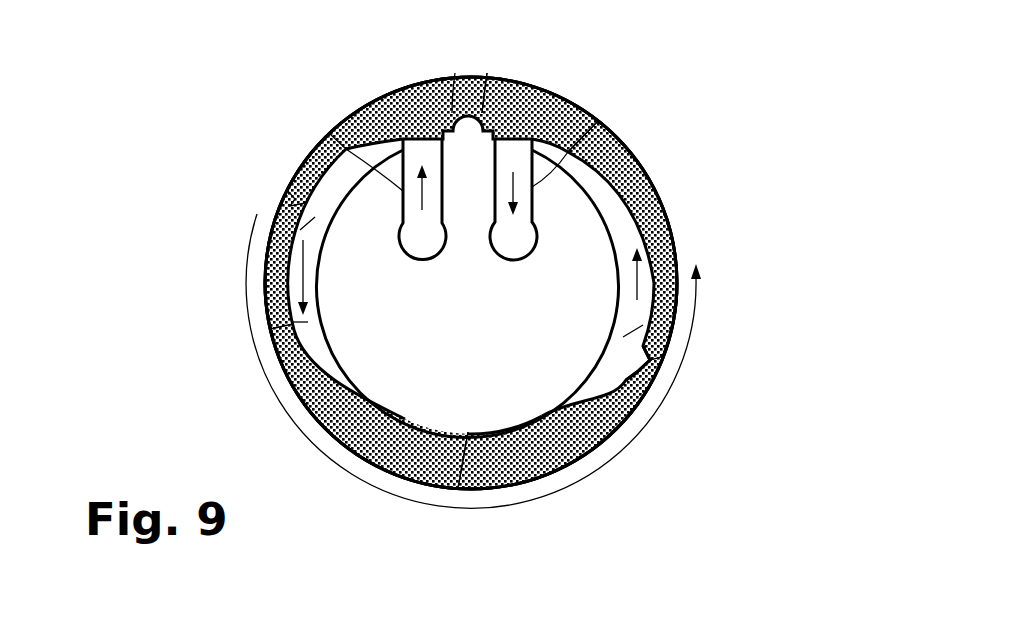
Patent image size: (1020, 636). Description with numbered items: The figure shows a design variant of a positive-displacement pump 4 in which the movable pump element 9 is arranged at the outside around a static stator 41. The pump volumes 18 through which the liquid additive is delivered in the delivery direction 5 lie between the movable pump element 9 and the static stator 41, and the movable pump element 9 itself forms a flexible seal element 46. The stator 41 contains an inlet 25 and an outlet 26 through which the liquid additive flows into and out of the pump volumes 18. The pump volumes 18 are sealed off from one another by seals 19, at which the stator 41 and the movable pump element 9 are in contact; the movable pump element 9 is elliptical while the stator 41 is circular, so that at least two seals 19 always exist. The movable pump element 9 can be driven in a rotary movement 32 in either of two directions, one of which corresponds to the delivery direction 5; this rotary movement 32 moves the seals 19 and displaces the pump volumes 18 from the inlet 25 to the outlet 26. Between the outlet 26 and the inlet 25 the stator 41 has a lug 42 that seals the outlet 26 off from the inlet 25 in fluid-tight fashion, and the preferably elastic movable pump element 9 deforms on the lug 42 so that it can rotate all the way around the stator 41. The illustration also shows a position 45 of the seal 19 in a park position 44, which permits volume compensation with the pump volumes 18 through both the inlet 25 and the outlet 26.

The positive-displacement pump 4 is at (698, 155).
The delivery direction 5 is at (330, 134).
The movable pump element 9 is at (559, 89).
The pump volumes 18 is at (673, 208).
The seals 19 is at (488, 73).
The inlet 25 is at (405, 258).
The outlet 26 is at (500, 258).
The rotary movement 32 is at (701, 303).
The stator 41 is at (623, 393).
The lug 42 is at (457, 73).
The park position 44 is at (516, 484).
The position of the seal 45 is at (478, 433).
The flexible seal element 46 is at (570, 101).